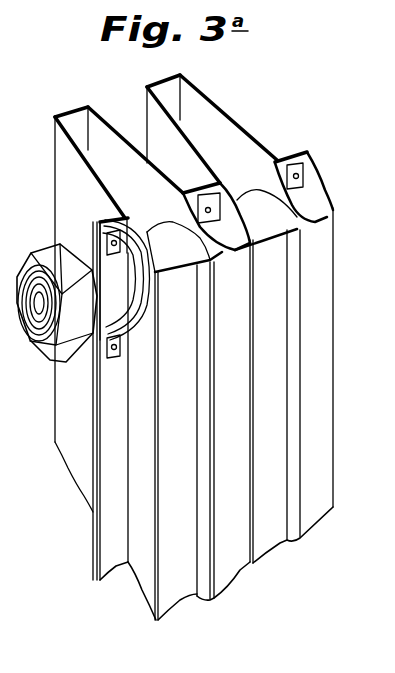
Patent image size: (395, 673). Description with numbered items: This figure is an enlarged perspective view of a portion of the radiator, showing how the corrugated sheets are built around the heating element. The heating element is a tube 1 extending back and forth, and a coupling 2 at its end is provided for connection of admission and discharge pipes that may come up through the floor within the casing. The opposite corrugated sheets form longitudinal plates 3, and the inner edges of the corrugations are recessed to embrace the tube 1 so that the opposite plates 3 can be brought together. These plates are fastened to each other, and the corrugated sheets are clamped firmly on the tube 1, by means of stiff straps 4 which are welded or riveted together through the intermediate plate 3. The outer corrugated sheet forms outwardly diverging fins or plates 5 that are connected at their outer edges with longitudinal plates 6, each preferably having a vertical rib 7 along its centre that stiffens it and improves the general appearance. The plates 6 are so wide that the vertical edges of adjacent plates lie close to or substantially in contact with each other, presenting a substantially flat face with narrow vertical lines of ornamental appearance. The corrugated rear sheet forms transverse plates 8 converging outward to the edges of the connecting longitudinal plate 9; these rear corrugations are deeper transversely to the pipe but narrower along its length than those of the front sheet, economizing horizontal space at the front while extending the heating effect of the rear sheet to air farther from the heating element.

The tube 1 is at (257, 203).
The coupling 2 is at (57, 303).
The longitudinal plate 3 is at (110, 222).
The stiff strap 4 is at (298, 182).
The fin 5 is at (328, 199).
The longitudinal plate 6 is at (318, 242).
The vertical rib 7 is at (296, 297).
The transverse plate 8 is at (217, 109).
The longitudinal plate 9 is at (67, 112).